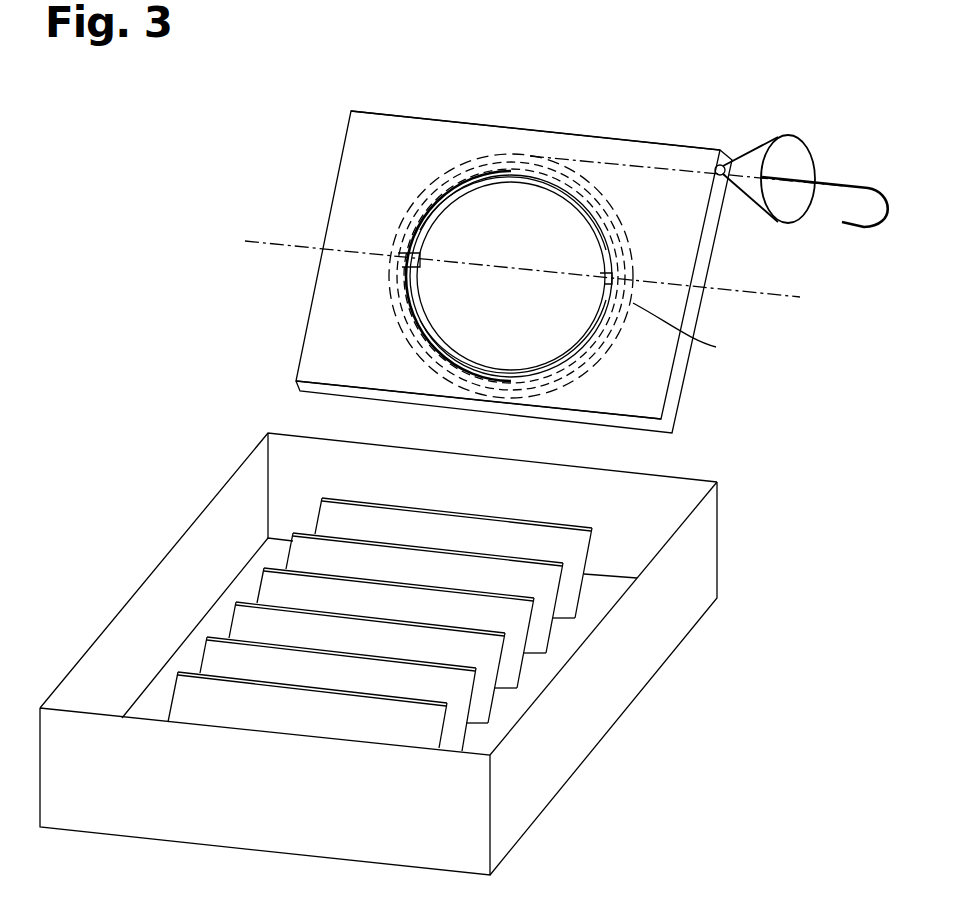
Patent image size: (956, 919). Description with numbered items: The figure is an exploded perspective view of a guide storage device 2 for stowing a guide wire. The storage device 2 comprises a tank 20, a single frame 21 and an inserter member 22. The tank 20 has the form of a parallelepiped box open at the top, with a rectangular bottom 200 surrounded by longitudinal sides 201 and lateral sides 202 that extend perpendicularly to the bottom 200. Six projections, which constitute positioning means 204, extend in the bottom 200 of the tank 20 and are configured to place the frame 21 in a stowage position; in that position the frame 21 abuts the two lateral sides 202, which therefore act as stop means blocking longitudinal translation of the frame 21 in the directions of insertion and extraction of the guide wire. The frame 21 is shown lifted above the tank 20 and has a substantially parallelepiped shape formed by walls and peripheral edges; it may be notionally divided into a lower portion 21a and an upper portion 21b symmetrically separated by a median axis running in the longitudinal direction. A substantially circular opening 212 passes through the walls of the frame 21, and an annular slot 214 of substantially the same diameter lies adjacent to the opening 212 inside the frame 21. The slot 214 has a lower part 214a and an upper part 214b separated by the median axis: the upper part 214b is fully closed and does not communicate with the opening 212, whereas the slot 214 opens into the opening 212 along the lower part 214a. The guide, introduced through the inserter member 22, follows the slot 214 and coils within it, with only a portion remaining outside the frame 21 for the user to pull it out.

The guide storage device 2 is at (815, 147).
The tank 20 is at (381, 666).
The frame 21 is at (526, 276).
The lower portion 21a is at (343, 362).
The upper portion 21b is at (440, 139).
The inserter member 22 is at (827, 133).
The bottom 200 is at (567, 637).
The longitudinal sides 201 is at (247, 813).
The lateral sides 202 is at (163, 608).
The positioning means (projections) 204 is at (395, 693).
The opening 212 is at (440, 306).
The slot 214 is at (410, 223).
The lower part 214a is at (554, 384).
The upper part 214b is at (542, 157).